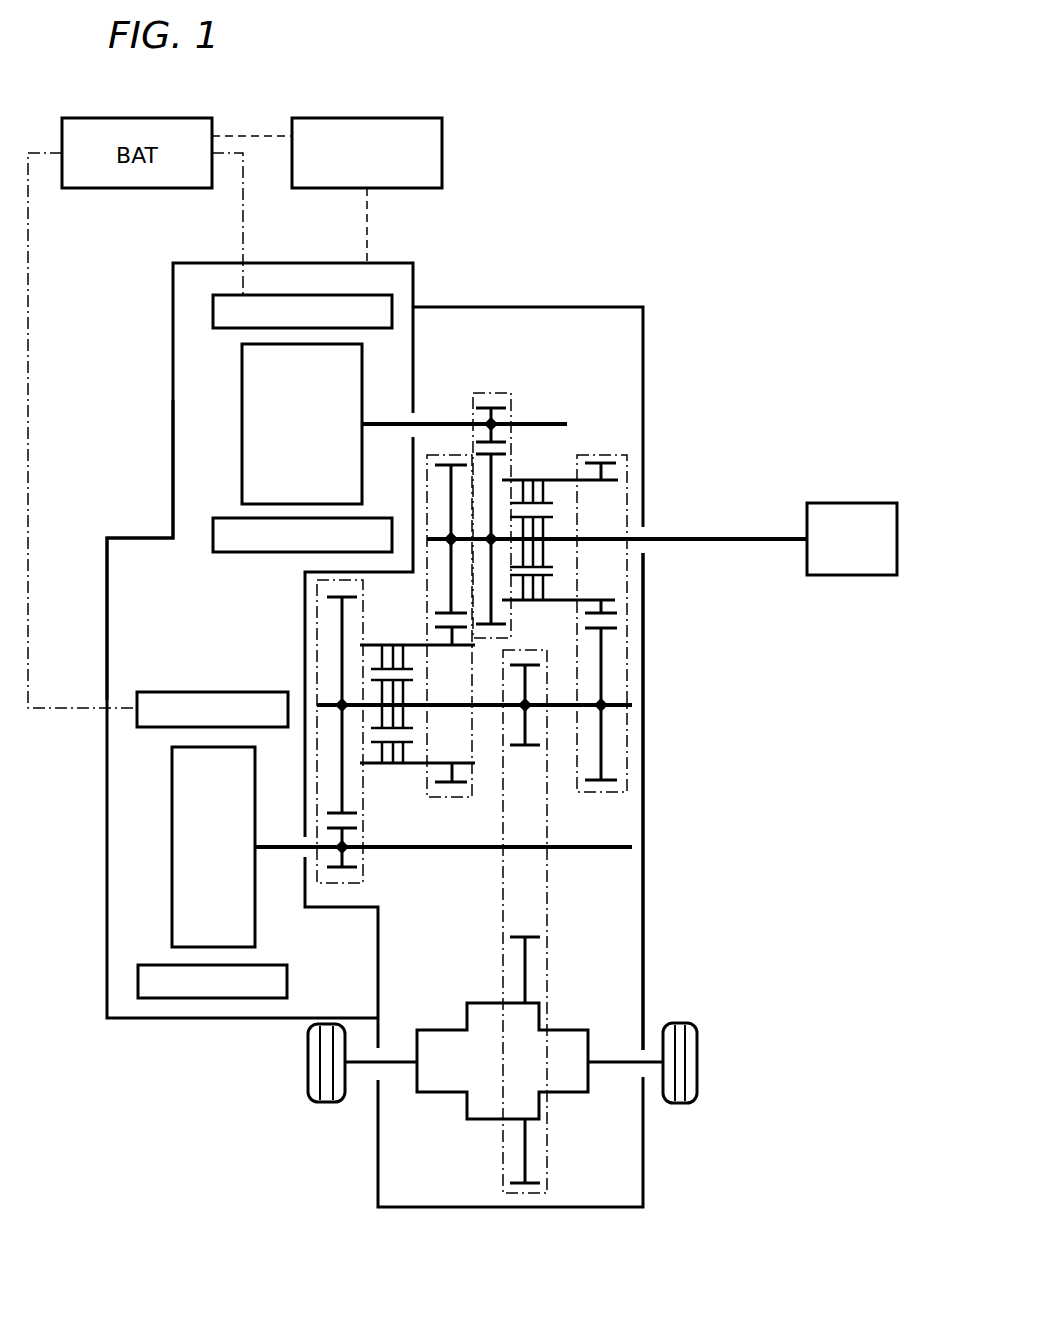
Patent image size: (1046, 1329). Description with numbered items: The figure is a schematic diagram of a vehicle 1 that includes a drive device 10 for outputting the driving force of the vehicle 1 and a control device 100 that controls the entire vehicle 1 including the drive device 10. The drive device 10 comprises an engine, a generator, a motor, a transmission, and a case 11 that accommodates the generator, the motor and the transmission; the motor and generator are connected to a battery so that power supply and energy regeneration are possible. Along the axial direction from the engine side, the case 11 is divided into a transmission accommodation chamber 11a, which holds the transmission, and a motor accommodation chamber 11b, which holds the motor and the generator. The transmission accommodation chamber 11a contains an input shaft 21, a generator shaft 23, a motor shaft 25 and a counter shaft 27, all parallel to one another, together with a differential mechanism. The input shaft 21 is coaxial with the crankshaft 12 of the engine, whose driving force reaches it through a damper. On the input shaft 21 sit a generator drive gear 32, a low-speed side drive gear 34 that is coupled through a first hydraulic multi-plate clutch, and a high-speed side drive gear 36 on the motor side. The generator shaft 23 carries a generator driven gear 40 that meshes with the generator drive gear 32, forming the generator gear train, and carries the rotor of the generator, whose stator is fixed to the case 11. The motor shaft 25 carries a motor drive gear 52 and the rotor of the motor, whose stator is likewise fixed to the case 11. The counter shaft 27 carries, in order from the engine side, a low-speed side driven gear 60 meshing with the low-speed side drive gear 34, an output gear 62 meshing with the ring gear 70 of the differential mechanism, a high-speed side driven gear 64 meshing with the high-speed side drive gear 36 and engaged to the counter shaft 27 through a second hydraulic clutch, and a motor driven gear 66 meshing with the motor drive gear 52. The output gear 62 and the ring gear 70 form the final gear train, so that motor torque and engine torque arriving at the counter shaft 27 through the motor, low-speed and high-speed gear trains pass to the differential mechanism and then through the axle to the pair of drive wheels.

The vehicle 1 is at (566, 140).
The drive device 10 is at (458, 282).
The case 11 is at (643, 338).
The transmission accommodation chamber 11a is at (618, 893).
The motor accommodation chamber 11b is at (148, 573).
The crankshaft 12 is at (742, 538).
The input shaft 21 is at (632, 539).
The generator shaft 23 is at (556, 424).
The motor shaft 25 is at (632, 836).
The counter shaft 27 is at (632, 720).
The generator drive gear 32 is at (500, 446).
The low-speed side drive gear 34 is at (610, 463).
The high-speed side drive gear 36 is at (445, 465).
The generator driven gear 40 is at (487, 408).
The motor drive gear 52 is at (355, 866).
The low-speed side driven gear 60 is at (627, 636).
The output gear 62 is at (535, 665).
The high-speed side driven gear 64 is at (458, 785).
The motor driven gear 66 is at (345, 597).
The ring gear 70 is at (518, 937).
The control device 100 is at (407, 118).